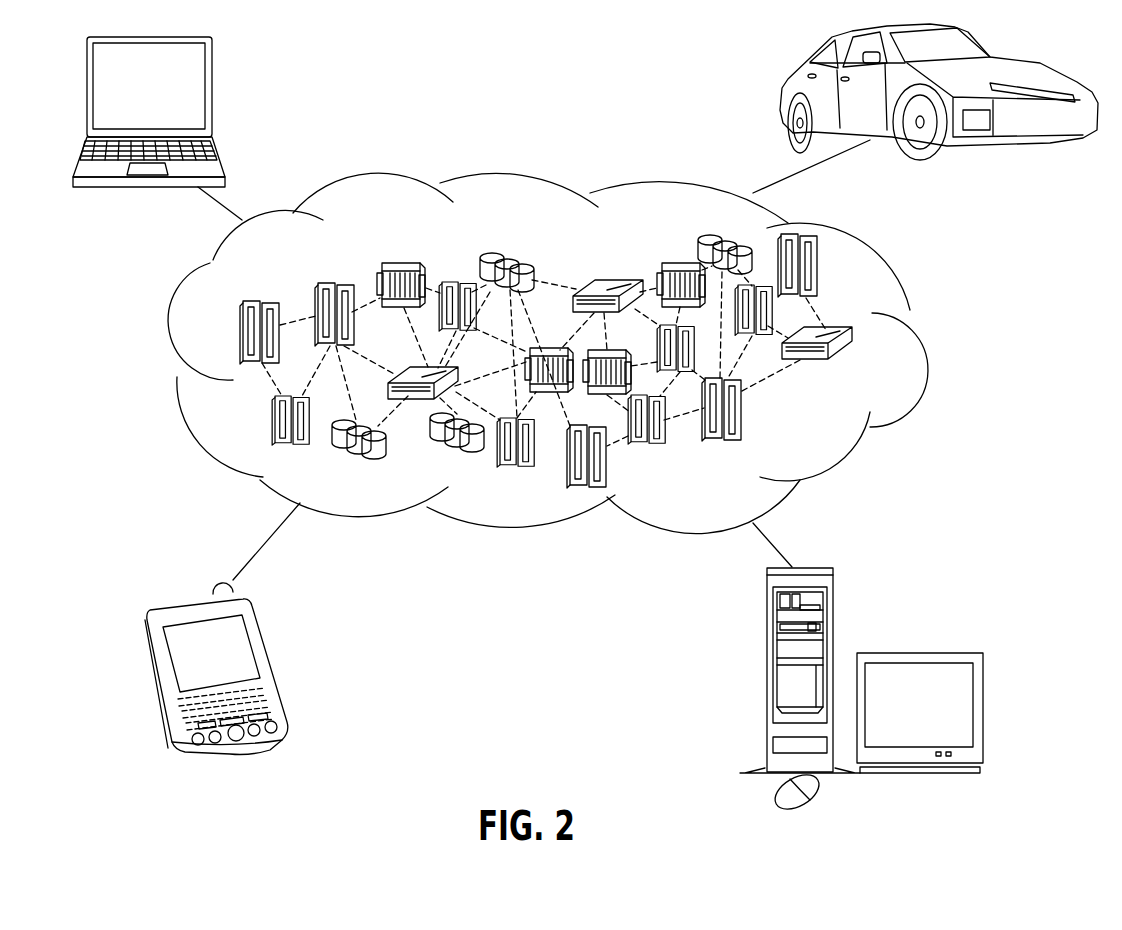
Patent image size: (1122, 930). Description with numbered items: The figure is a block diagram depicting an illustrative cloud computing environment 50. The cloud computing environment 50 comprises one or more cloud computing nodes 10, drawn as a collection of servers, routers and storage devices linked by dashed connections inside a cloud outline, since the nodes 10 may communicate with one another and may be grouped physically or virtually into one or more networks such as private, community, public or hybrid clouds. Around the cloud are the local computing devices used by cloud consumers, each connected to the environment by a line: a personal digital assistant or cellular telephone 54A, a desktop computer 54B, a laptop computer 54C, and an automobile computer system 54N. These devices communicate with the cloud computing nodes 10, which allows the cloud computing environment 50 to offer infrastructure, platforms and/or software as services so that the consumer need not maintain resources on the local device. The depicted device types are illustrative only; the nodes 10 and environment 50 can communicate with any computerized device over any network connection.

The cloud computing node 10 is at (840, 440).
The cloud computing environment 50 is at (915, 345).
The personal digital assistant or cellular telephone 54A is at (260, 636).
The desktop computer 54B is at (767, 622).
The laptop computer 54C is at (212, 72).
The automobile computer system 54N is at (782, 86).